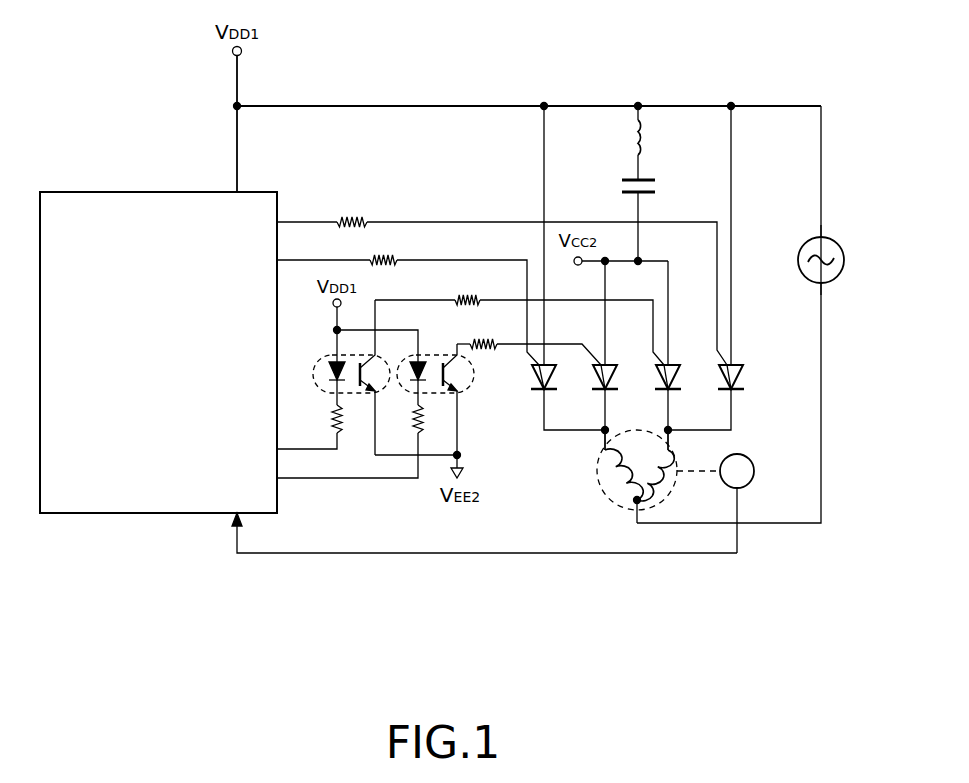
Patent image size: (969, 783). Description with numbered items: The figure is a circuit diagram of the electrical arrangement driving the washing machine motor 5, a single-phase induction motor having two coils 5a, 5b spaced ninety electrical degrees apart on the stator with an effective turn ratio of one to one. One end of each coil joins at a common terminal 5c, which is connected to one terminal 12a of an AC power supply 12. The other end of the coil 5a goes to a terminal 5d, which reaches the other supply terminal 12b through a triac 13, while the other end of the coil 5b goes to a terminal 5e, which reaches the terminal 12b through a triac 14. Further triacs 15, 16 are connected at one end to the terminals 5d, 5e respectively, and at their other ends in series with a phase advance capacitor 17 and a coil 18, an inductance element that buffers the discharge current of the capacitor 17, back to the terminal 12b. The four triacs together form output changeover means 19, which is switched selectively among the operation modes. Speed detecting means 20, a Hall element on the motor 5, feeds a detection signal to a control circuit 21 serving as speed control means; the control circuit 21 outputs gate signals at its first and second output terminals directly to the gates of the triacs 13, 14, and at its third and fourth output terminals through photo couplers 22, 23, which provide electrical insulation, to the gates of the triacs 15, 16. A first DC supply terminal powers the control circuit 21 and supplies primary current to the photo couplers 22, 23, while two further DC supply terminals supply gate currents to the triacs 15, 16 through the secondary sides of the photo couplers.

The motor 5 is at (632, 515).
The coil 5a is at (608, 483).
The coil 5b is at (660, 486).
The common terminal 5c is at (638, 507).
The terminal 5d is at (600, 436).
The terminal 5e is at (671, 436).
The AC power supply 12 is at (820, 258).
The terminal of AC power supply 12a is at (818, 284).
The terminal of AC power supply 12b is at (818, 238).
The triac 13 is at (535, 380).
The triac 14 is at (742, 386).
The triac 15 is at (600, 394).
The triac 16 is at (673, 394).
The phase advance capacitor 17 is at (658, 191).
The coil 18 is at (652, 141).
The output changeover means 19 is at (768, 375).
The speed detecting means 20 is at (754, 481).
The control circuit 21 is at (86, 192).
The photo coupler 22 is at (473, 380).
The photo coupler 23 is at (318, 366).